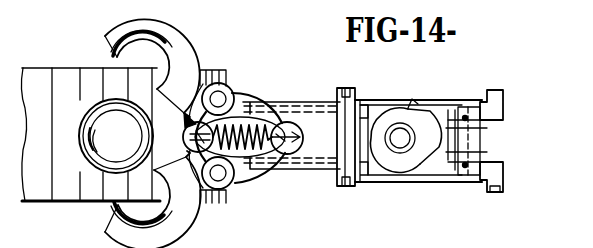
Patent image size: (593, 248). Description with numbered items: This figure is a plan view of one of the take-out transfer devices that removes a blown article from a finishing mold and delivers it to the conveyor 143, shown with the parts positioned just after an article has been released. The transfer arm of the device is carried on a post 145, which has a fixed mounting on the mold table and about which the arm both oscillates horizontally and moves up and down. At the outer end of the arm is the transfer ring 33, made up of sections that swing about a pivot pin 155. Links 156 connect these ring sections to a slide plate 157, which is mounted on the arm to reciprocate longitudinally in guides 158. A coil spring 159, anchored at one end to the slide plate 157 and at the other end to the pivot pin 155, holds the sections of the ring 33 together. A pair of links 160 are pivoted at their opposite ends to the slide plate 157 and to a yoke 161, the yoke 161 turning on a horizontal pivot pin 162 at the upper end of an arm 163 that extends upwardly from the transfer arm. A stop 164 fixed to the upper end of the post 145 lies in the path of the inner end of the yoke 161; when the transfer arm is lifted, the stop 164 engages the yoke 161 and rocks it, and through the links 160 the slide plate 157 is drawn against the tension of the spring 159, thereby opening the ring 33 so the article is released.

The conveyor 143 is at (60, 54).
The transfer ring 33 is at (178, 40).
The pivot pin 155 is at (196, 136).
The links 156 is at (236, 98).
The slide plate 157 is at (328, 120).
The guides 158 is at (315, 168).
The coil spring 159 is at (250, 173).
The links 160 is at (477, 100).
The yoke 161 is at (488, 118).
The horizontal pivot pin 162 is at (490, 160).
The arm 163 is at (482, 152).
The stop 164 is at (422, 105).
The post 145 is at (403, 148).